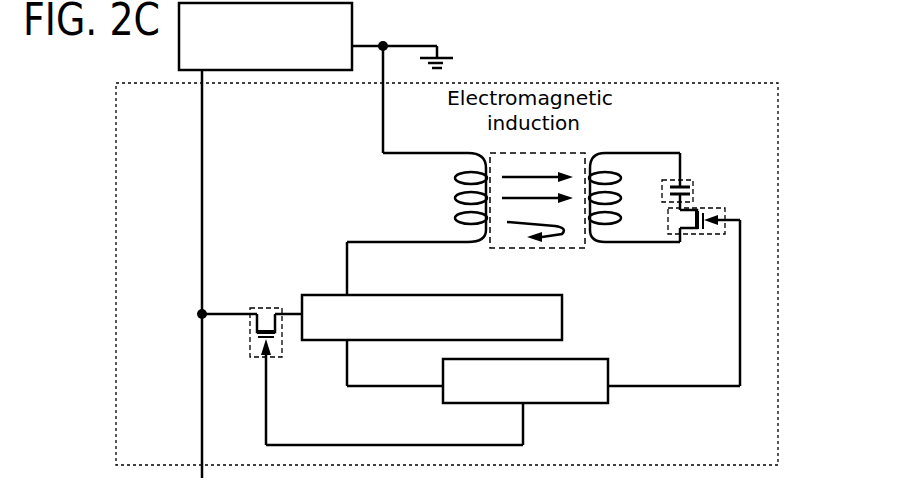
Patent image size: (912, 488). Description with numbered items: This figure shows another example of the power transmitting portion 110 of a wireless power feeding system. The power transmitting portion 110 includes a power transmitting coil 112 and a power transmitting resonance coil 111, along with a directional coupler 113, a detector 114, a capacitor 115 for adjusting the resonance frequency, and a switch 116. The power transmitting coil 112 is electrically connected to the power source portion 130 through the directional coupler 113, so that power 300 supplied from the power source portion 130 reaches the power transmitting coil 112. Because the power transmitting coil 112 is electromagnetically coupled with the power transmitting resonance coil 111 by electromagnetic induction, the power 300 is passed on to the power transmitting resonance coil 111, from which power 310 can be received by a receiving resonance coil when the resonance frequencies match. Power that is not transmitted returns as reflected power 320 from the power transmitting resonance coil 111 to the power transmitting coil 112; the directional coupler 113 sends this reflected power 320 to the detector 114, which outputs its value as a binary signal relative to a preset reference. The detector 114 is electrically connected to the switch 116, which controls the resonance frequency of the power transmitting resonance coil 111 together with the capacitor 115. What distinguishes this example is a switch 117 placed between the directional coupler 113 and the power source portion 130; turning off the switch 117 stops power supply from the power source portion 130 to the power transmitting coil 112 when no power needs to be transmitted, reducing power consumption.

The power transmitting portion 110 is at (720, 430).
The power transmitting resonance coil 111 is at (650, 153).
The power transmitting coil 112 is at (466, 154).
The directional coupler 113 is at (432, 317).
The detector 114 is at (525, 381).
The capacitor for adjusting the resonance frequency 115 is at (695, 190).
The switch 116 is at (695, 235).
The switch 117 is at (270, 307).
The power source portion 130 is at (265, 36).
The power 300 is at (507, 248).
The power 310 is at (568, 167).
The reflected power 320 is at (553, 233).